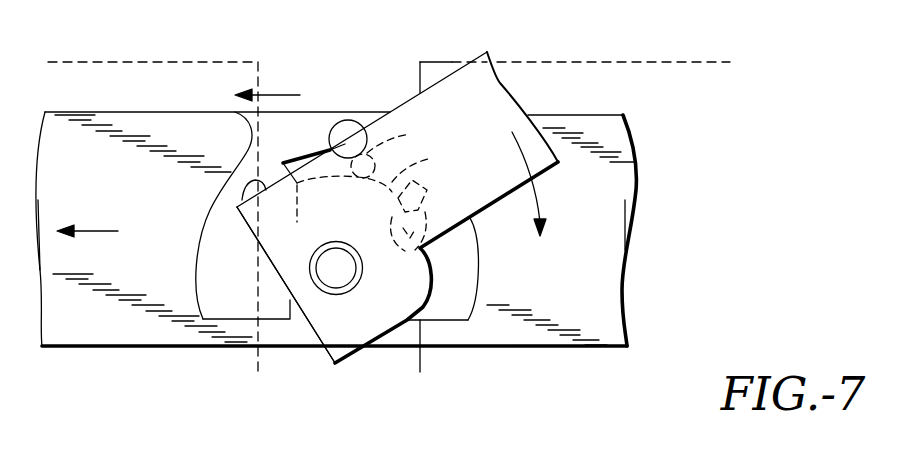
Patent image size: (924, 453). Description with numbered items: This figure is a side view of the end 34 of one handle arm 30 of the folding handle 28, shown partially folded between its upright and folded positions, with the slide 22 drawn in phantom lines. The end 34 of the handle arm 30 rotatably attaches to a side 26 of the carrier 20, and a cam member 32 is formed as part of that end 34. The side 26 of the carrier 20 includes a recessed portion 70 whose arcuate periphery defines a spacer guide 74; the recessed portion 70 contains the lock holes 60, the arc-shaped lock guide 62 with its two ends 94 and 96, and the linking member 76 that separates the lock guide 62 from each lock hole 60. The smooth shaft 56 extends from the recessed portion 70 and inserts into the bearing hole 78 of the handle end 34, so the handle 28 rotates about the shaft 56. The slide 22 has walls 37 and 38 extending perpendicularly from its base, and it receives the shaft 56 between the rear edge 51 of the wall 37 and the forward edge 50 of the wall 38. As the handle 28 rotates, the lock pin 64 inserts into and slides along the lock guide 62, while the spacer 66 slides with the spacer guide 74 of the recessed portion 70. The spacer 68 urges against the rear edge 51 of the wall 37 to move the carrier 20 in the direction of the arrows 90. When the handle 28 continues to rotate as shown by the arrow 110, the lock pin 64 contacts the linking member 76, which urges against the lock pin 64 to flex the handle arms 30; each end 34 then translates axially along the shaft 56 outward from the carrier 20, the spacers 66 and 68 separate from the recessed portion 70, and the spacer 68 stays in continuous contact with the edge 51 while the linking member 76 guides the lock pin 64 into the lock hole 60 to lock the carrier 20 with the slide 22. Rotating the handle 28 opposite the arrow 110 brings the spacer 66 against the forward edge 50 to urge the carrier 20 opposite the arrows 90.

The carrier 20 is at (136, 187).
The slide 22 is at (28, 97).
The side 26 is at (57, 259).
The folding handle 28 is at (500, 82).
The handle arm 30 is at (488, 52).
The cam member 32 is at (313, 312).
The end 34 is at (363, 333).
The wall 37 is at (701, 172).
The wall 38 is at (148, 56).
The forward edge 50 is at (262, 66).
The rear edge 51 is at (443, 62).
The shaft 56 is at (348, 272).
The lock hole 60 is at (436, 184).
The lock guide 62 is at (307, 150).
The lock pin 64 is at (372, 148).
The spacer 66 is at (350, 118).
The spacer 68 is at (428, 212).
The recessed portion 70 is at (463, 292).
The spacer guide 74 is at (193, 260).
The linking member 76 is at (428, 162).
The bearing hole 78 is at (336, 295).
The arrows 90 is at (282, 93).
The end 94 is at (337, 210).
The end 96 is at (418, 136).
The arrow 110 is at (542, 198).